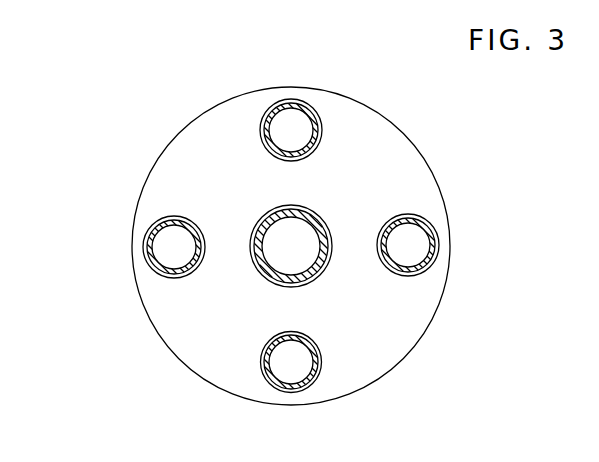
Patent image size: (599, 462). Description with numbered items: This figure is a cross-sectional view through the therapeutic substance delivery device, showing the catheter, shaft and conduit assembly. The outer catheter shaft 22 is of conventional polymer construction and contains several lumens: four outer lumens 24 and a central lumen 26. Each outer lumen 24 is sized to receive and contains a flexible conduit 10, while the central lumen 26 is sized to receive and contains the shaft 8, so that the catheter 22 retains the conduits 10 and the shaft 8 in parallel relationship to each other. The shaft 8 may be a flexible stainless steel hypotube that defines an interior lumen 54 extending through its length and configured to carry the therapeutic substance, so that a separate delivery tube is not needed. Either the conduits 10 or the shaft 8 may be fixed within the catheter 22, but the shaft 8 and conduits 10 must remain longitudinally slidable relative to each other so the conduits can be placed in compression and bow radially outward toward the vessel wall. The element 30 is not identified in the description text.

The shaft 8 is at (293, 213).
The conduit 10 is at (283, 107).
The outer catheter shaft 22 is at (379, 102).
The outer lumen 24 is at (308, 120).
The central lumen 26 is at (301, 283).
The tube bore 30 is at (290, 130).
The interior lumen 54 is at (292, 263).